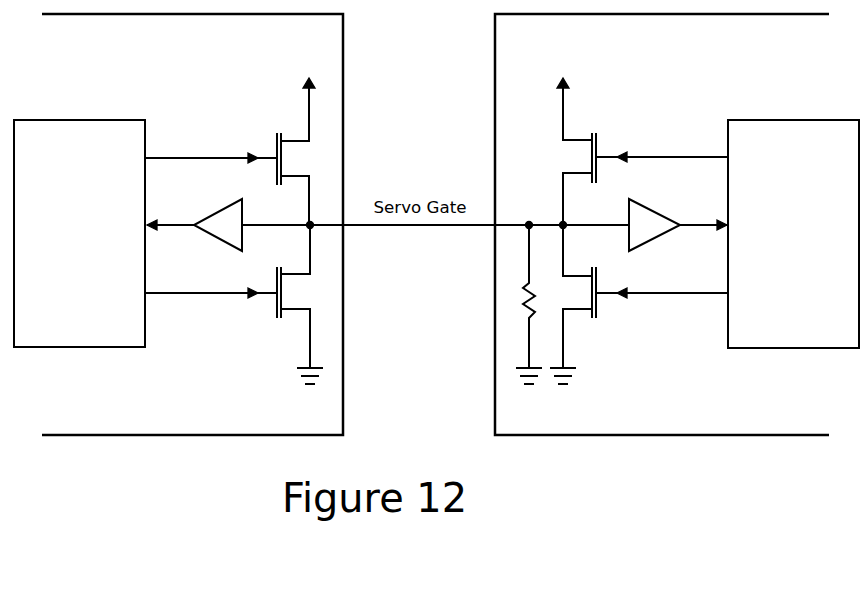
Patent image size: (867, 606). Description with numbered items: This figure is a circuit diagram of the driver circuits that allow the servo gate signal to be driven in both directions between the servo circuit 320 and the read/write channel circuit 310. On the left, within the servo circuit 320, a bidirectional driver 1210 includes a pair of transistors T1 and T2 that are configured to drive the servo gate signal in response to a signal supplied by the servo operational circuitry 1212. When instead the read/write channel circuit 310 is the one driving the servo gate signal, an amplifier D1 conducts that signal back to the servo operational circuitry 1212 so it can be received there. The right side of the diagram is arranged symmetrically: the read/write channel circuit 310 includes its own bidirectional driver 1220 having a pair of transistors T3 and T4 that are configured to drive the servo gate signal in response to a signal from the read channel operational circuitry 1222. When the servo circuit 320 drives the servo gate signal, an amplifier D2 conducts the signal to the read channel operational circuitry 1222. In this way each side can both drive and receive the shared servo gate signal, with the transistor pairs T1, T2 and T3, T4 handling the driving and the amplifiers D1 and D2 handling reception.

The servo circuit 320 is at (155, 68).
The read/write channel circuit 310 is at (669, 68).
The servo operational circuitry 1212 is at (60, 281).
The read channel operational circuitry 1222 is at (774, 291).
The transistor T1 is at (276, 142).
The transistor T2 is at (272, 303).
The transistor T3 is at (598, 143).
The transistor T4 is at (598, 300).
The amplifier D1 is at (220, 212).
The amplifier D2 is at (650, 212).
The bidirectional driver 1210 is at (240, 374).
The bidirectional driver 1220 is at (594, 385).